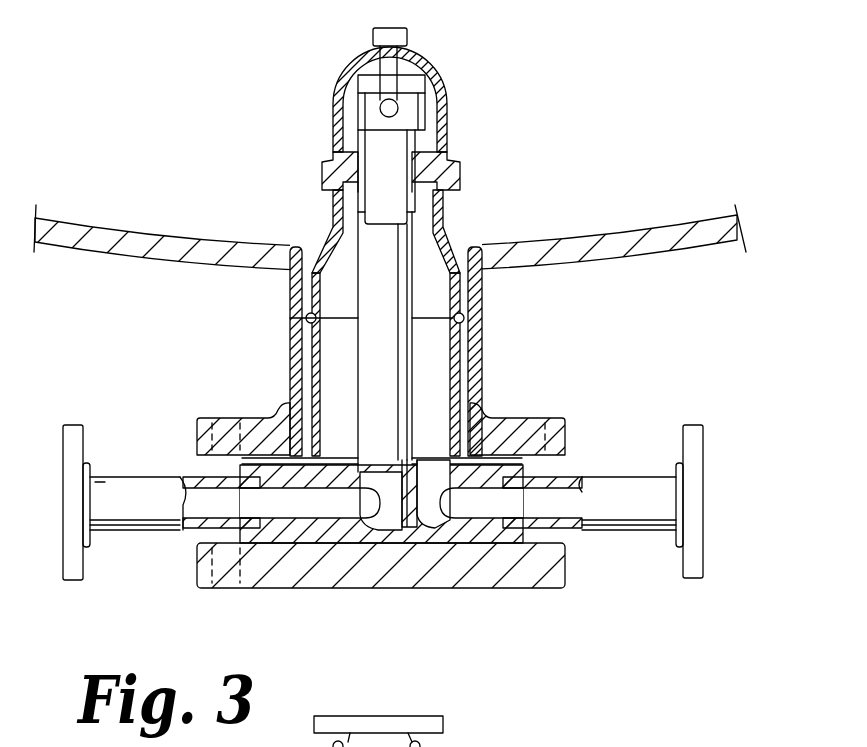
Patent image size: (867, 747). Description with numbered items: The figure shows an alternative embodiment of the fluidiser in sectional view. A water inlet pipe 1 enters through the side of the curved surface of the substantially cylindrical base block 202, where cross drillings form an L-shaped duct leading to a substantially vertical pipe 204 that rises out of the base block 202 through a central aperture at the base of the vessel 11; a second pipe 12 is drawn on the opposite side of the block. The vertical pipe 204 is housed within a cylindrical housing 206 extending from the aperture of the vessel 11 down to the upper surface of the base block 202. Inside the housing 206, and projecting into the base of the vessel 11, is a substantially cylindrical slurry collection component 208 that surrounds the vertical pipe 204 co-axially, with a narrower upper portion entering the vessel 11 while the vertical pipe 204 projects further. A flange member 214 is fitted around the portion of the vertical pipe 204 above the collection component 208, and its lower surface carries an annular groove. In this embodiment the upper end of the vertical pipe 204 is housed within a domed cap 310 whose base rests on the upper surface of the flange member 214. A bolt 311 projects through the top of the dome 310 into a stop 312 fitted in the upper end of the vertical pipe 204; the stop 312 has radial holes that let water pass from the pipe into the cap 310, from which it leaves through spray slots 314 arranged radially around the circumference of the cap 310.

The water inlet pipe 1 is at (143, 508).
The second pipe 12 is at (642, 510).
The vessel 11 is at (698, 237).
The base block 202 is at (463, 537).
The vertical pipe 204 is at (378, 303).
The cylindrical housing 206 is at (487, 343).
The slurry collection component 208 is at (483, 381).
The flange member 214 is at (327, 192).
The domed cap 310 is at (443, 110).
The bolt 311 is at (400, 35).
The stop 312 is at (357, 120).
The spray slots 314 is at (447, 152).